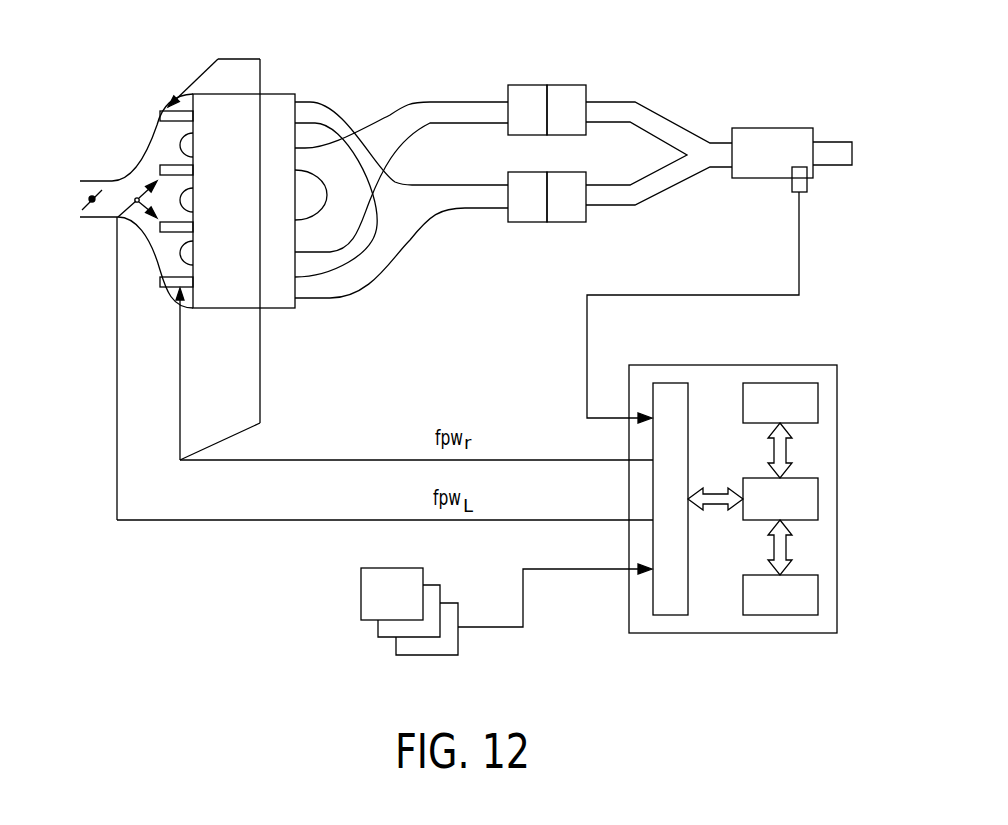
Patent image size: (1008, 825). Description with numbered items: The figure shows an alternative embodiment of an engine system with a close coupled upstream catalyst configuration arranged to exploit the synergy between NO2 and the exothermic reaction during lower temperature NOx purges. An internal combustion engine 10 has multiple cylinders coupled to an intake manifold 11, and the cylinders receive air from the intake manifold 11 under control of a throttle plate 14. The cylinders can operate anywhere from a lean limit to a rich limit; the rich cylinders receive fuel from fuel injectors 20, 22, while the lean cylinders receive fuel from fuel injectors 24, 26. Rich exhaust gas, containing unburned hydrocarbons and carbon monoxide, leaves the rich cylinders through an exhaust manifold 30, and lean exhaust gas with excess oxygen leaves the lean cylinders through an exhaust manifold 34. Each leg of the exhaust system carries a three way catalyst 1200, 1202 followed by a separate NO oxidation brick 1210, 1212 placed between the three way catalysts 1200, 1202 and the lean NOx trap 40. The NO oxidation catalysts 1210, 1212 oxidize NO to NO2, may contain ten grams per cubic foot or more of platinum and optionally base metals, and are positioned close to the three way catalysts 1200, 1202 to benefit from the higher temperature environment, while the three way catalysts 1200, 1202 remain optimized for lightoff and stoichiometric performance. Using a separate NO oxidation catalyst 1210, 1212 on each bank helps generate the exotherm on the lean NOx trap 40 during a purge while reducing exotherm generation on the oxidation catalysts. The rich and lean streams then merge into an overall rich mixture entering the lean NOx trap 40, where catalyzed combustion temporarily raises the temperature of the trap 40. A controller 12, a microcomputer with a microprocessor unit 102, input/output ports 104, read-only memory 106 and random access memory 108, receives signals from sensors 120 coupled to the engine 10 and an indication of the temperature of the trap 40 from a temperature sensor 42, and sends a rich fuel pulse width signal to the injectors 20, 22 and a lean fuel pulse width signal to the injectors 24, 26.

The internal combustion engine 10 is at (273, 310).
The intake manifold 11 is at (132, 170).
The controller 12 is at (717, 634).
The throttle plate 14 is at (92, 199).
The fuel injector 20 is at (159, 114).
The fuel injector 22 is at (160, 282).
The fuel injector 24 is at (159, 162).
The fuel injector 26 is at (160, 227).
The exhaust manifold 30 is at (380, 277).
The exhaust manifold 34 is at (395, 108).
The lean NOx trap 40 is at (762, 182).
The temperature sensor 42 is at (680, 292).
The microprocessor unit 102 is at (820, 498).
The input/output ports 104 is at (670, 383).
The read-only memory 106 is at (780, 383).
The random access memory 108 is at (820, 598).
The sensors 120 is at (361, 592).
The three way catalyst 1200 is at (527, 92).
The three way catalyst 1202 is at (527, 215).
The NO oxidation catalyst 1210 is at (565, 92).
The NO oxidation catalyst 1212 is at (565, 215).